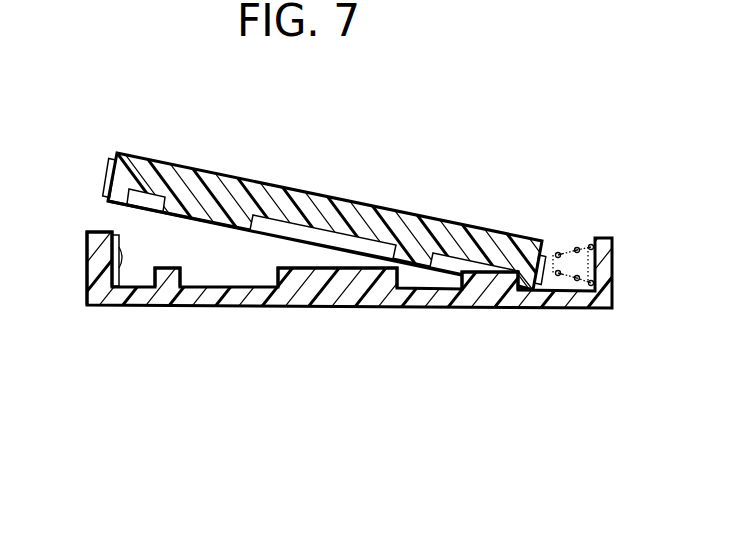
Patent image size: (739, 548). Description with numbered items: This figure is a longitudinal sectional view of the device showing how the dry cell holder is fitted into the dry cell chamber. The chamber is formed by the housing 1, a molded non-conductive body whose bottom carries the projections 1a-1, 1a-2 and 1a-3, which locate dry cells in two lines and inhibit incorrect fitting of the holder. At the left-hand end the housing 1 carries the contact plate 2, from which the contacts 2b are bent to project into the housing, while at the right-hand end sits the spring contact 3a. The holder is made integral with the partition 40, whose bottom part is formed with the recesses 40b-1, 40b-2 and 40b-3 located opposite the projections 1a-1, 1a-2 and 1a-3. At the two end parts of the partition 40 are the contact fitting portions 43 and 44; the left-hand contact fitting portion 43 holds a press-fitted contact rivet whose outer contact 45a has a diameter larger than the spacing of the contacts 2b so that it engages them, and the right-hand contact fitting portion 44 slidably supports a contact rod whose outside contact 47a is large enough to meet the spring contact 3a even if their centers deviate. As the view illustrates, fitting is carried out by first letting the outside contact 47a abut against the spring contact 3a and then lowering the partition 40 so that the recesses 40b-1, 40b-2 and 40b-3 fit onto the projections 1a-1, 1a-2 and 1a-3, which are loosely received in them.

The housing 1 is at (263, 305).
The projection 1a-1 is at (164, 276).
The projection 1a-2 is at (350, 280).
The projection 1a-3 is at (485, 285).
The contact plate 2 is at (88, 245).
The contacts 2b is at (120, 290).
The spring contact 3a is at (577, 247).
The partition 40 is at (371, 212).
The recess 40b-1 is at (148, 198).
The recess 40b-2 is at (281, 228).
The recess 40b-3 is at (453, 265).
The contact fitting portion 43 is at (113, 203).
The contact fitting portion 44 is at (522, 288).
The outer contact 45a is at (106, 167).
The outside contact 47a is at (547, 252).